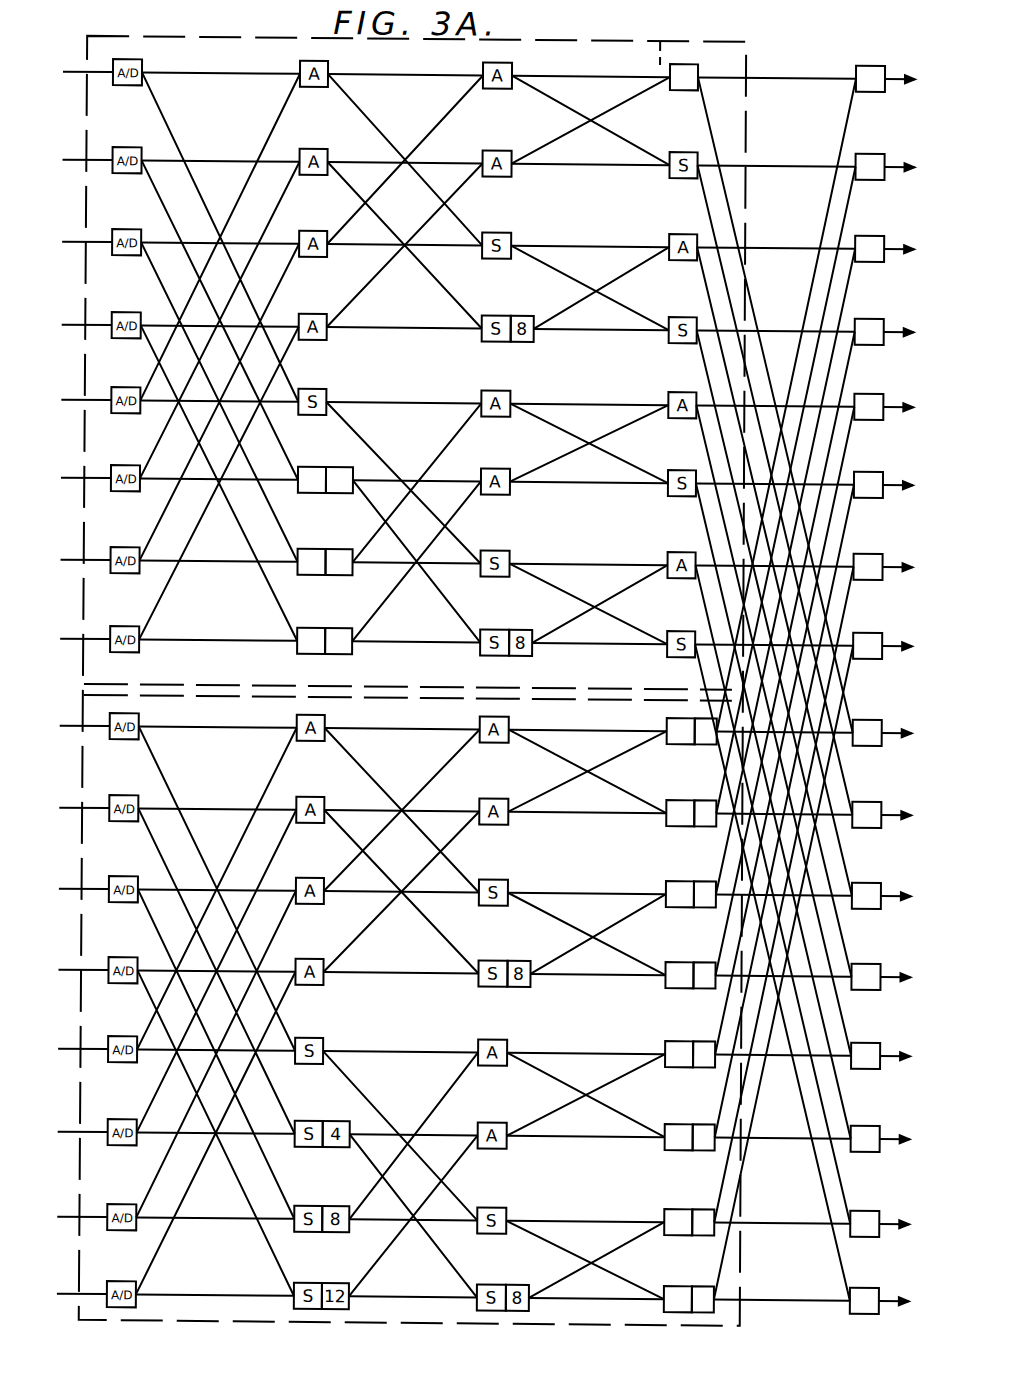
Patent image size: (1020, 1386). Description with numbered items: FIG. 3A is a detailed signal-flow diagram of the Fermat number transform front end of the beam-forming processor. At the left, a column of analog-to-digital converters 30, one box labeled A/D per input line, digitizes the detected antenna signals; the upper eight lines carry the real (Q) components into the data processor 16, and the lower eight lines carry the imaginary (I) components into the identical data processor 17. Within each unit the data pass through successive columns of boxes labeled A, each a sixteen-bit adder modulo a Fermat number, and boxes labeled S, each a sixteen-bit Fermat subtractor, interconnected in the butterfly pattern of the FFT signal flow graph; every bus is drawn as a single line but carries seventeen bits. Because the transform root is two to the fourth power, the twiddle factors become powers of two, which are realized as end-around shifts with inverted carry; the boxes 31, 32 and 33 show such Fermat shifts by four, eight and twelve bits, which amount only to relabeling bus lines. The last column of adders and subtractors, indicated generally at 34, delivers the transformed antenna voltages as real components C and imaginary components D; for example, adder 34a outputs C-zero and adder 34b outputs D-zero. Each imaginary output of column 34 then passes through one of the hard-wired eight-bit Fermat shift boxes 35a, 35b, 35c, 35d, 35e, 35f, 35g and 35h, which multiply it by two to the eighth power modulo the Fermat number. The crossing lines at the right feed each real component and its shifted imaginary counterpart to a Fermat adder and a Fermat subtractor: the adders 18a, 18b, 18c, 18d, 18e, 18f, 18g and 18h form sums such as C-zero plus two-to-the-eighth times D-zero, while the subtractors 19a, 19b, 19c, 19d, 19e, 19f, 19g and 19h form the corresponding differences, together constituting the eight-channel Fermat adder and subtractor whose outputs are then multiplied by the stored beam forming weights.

The analog-to-digital converters 30 is at (142, 48).
The data processor 16 is at (84, 340).
The data processor 17 is at (82, 926).
The Fermat shift box 31 is at (336, 464).
The Fermat shift box 32 is at (338, 547).
The Fermat shift box 33 is at (338, 626).
The adder and subtractor column 34 is at (666, 46).
The adder 34a is at (704, 69).
The adder 34b is at (668, 724).
The Fermat shift box 35a is at (708, 740).
The Fermat shift box 35b is at (708, 822).
The Fermat shift box 35c is at (708, 903).
The Fermat shift box 35d is at (708, 984).
The Fermat shift box 35e is at (708, 1063).
The Fermat shift box 35f is at (708, 1146).
The Fermat shift box 35g is at (708, 1231).
The Fermat shift box 35h is at (720, 1310).
The Fermat adder 18a is at (866, 59).
The Fermat adder 18b is at (866, 147).
The Fermat adder 18c is at (866, 229).
The Fermat adder 18d is at (866, 312).
The Fermat adder 18e is at (866, 387).
The Fermat adder 18f is at (866, 465).
The Fermat adder 18g is at (866, 547).
The Fermat adder 18h is at (866, 626).
The Fermat subtractor 19a is at (866, 713).
The Fermat subtractor 19b is at (866, 795).
The Fermat subtractor 19c is at (866, 876).
The Fermat subtractor 19d is at (866, 957).
The Fermat subtractor 19e is at (866, 1036).
The Fermat subtractor 19f is at (866, 1119).
The Fermat subtractor 19g is at (866, 1204).
The Fermat subtractor 19h is at (866, 1281).